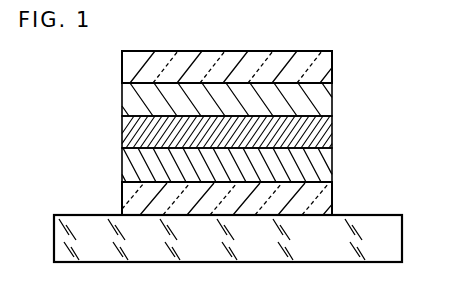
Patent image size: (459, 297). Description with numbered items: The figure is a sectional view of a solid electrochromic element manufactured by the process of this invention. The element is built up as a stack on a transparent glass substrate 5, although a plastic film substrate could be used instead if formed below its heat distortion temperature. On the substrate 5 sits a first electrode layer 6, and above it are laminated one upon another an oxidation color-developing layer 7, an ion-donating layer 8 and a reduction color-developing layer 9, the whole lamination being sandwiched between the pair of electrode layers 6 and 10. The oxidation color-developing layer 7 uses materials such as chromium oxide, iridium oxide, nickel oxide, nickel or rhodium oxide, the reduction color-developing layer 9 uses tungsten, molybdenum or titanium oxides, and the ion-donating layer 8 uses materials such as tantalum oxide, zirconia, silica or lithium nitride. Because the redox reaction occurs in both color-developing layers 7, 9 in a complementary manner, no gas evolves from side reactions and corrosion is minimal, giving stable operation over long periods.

The transparent glass substrate 5 is at (402, 237).
The electrode layer 6 is at (332, 192).
The oxidation color-developing layer 7 is at (332, 162).
The ion-donating layer 8 is at (332, 131).
The reduction color-developing layer 9 is at (332, 95).
The electrode layer 10 is at (332, 64).